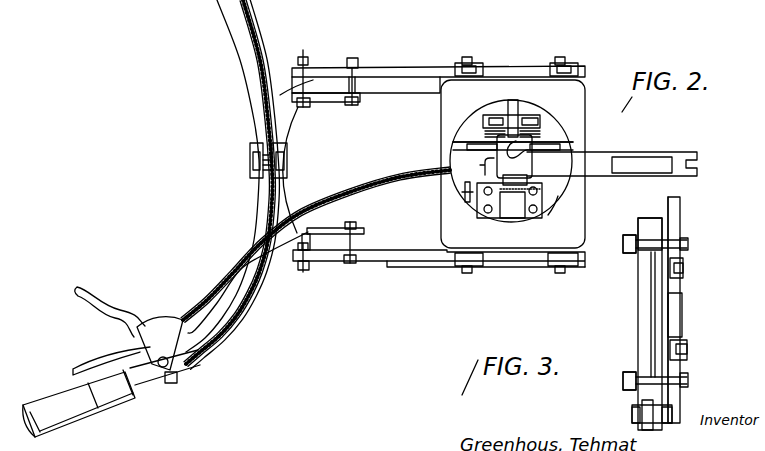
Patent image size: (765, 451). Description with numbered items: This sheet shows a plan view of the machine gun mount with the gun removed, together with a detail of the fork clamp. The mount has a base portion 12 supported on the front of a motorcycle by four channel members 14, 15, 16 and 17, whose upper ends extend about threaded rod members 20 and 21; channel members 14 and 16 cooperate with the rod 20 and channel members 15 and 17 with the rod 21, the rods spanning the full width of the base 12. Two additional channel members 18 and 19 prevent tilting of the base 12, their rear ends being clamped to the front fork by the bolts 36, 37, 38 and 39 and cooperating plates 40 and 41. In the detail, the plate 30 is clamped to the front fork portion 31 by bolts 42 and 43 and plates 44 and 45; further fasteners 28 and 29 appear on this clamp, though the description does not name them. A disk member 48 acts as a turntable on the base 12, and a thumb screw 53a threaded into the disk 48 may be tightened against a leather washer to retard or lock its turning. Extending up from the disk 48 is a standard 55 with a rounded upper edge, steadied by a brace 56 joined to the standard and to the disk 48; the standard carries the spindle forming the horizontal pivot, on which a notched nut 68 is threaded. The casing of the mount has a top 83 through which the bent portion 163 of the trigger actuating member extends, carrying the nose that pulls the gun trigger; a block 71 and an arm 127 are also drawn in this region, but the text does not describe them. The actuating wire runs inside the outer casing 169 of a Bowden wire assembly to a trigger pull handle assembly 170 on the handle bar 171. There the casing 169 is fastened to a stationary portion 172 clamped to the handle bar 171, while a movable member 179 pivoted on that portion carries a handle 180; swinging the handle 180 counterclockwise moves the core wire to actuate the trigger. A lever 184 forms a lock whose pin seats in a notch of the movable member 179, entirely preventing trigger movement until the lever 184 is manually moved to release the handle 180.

In FIG. 2, the base portion 12 is at (585, 200).
In FIG. 2, the channel member 14 is at (478, 63).
In FIG. 2, the channel member 15 is at (580, 67).
In FIG. 2, the channel member 16 is at (433, 268).
In FIG. 3, the channel member 16 is at (683, 232).
In FIG. 2, the channel member 17 is at (540, 266).
In FIG. 3, the channel member 17 is at (682, 325).
In FIG. 2, the channel member 18 is at (368, 70).
In FIG. 2, the channel member 19 is at (379, 262).
In FIG. 2, the threaded rod member 20 is at (466, 57).
In FIG. 2, the threaded rod member 21 is at (562, 57).
In FIG. 3, the clamp bolt 28 is at (685, 266).
In FIG. 3, the clamp bolt 29 is at (685, 353).
In FIG. 3, the plate 30 is at (662, 310).
In FIG. 3, the front fork portion 31 is at (645, 302).
In FIG. 2, the bolt 36 is at (357, 221).
In FIG. 2, the bolt 37 is at (302, 272).
In FIG. 2, the bolt 38 is at (358, 102).
In FIG. 2, the bolt 39 is at (303, 57).
In FIG. 2, the plate 40 is at (330, 96).
In FIG. 2, the plate 41 is at (325, 228).
In FIG. 3, the bolt 42 is at (650, 242).
In FIG. 3, the bolt 43 is at (650, 380).
In FIG. 3, the plate 44 is at (633, 255).
In FIG. 3, the plate 45 is at (637, 370).
In FIG. 2, the disk member 48 is at (455, 147).
In FIG. 2, the thumb screw 53a is at (472, 193).
In FIG. 2, the standard 55 is at (520, 142).
In FIG. 2, the brace 56 is at (508, 99).
In FIG. 2, the nut 68 is at (497, 165).
In FIG. 2, the block 71 is at (517, 213).
In FIG. 2, the top 83 is at (558, 207).
In FIG. 2, the arm 127 is at (597, 153).
In FIG. 2, the bent portion 163 is at (535, 140).
In FIG. 2, the outer casing 169 is at (338, 185).
In FIG. 2, the trigger pull handle assembly 170 is at (133, 346).
In FIG. 2, the handle bar 171 is at (242, 318).
In FIG. 2, the stationary portion 172 is at (168, 308).
In FIG. 2, the movable member 179 is at (192, 362).
In FIG. 2, the handle 180 is at (97, 313).
In FIG. 2, the lever 184 is at (90, 367).